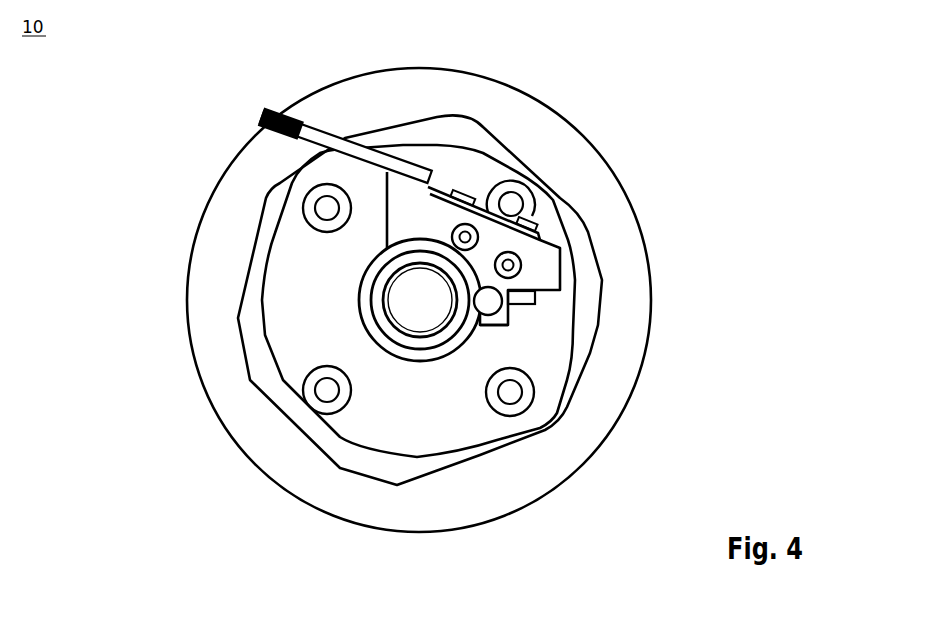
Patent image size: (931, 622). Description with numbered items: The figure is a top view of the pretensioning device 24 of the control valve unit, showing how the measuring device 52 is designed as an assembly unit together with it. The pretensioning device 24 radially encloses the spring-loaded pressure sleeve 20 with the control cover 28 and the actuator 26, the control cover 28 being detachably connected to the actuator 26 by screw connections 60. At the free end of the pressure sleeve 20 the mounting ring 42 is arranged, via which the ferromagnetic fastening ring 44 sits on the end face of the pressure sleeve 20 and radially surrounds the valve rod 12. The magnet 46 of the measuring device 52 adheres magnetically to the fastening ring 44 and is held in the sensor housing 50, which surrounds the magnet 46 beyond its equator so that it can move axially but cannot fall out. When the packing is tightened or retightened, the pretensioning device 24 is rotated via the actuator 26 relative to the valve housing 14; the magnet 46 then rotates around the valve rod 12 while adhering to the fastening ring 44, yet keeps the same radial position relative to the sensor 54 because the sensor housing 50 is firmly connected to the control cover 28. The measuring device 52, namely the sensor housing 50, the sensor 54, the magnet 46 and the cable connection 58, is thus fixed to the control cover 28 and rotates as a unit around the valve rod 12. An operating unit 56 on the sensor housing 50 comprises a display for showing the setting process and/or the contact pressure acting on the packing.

The valve rod 12 is at (450, 283).
The valve housing 14 is at (250, 407).
The pressure sleeve 20 is at (358, 311).
The pretensioning device 24 is at (560, 425).
The actuator 26 is at (403, 470).
The control cover 28 is at (387, 440).
The mounting ring 42 is at (367, 337).
The fastening ring 44 is at (360, 292).
The magnet 46 is at (520, 318).
The sensor housing 50 is at (537, 253).
The measuring device 52 is at (444, 179).
The sensor 54 is at (502, 302).
The operating unit 56 is at (480, 195).
The cable connection 58 is at (360, 152).
The screw connections 60 is at (518, 403).